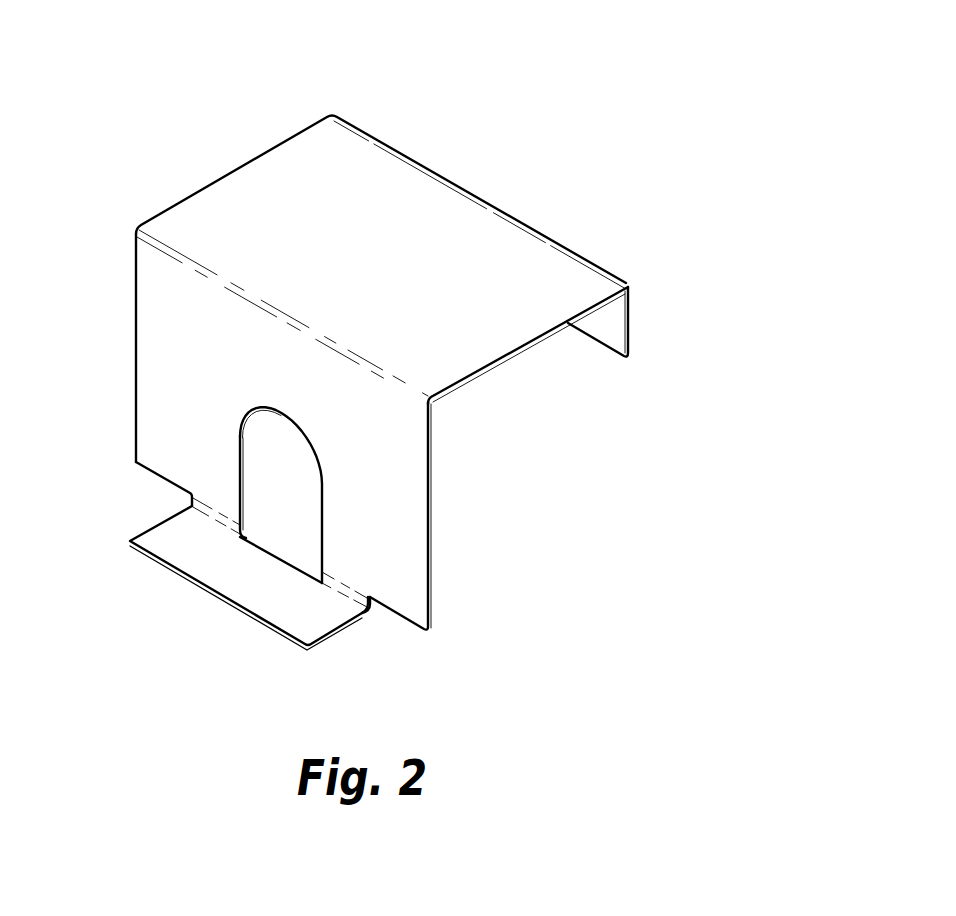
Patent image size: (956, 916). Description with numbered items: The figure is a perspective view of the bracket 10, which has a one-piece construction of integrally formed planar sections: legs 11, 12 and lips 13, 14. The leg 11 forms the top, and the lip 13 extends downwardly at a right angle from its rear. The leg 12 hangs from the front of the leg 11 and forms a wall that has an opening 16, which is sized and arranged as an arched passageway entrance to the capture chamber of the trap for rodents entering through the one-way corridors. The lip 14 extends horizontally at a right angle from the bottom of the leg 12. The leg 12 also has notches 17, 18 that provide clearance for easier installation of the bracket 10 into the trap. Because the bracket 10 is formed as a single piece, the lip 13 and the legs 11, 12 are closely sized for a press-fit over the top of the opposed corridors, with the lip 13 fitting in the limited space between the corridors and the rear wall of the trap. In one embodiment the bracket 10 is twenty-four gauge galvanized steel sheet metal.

The bracket 10 is at (575, 152).
The leg 11 is at (470, 353).
The leg 12 is at (430, 492).
The lip 13 is at (630, 313).
The lip 14 is at (222, 578).
The opening 16 is at (297, 428).
The notch 17 is at (155, 477).
The notch 18 is at (402, 619).